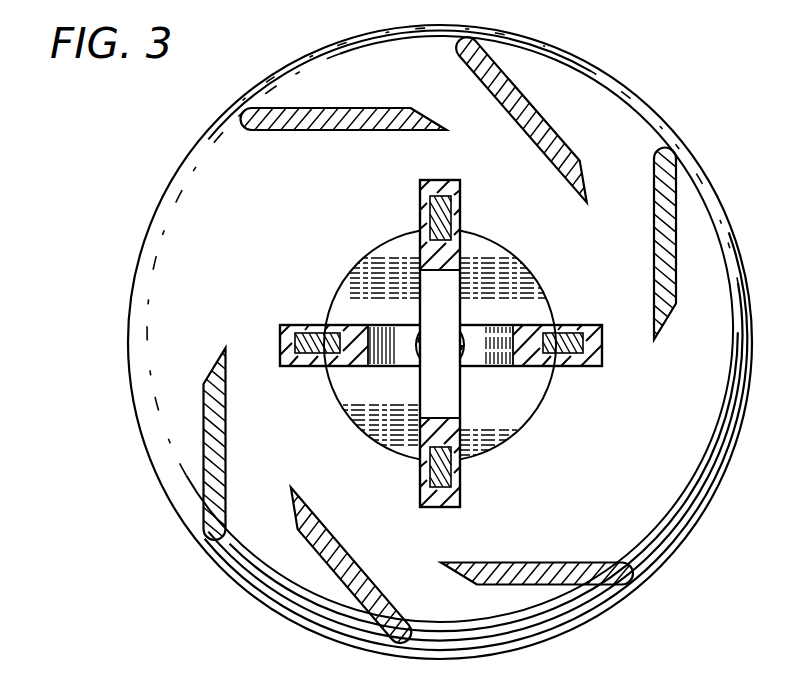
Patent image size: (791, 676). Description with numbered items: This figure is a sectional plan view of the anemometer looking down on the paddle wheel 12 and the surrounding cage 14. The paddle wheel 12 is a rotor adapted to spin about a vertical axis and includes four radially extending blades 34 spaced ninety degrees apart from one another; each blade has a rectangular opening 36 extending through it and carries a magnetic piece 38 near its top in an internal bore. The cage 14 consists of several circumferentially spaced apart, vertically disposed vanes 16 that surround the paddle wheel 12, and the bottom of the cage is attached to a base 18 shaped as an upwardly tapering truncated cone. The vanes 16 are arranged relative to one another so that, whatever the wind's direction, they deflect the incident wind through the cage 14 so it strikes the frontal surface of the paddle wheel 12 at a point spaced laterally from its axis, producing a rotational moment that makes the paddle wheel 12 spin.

The paddle wheel 12 is at (538, 323).
The cage 14 is at (578, 125).
The vanes 16 is at (343, 108).
The base 18 is at (728, 392).
The blades 34 is at (452, 264).
The rectangular opening 36 is at (375, 325).
The magnetic piece 38 is at (315, 331).